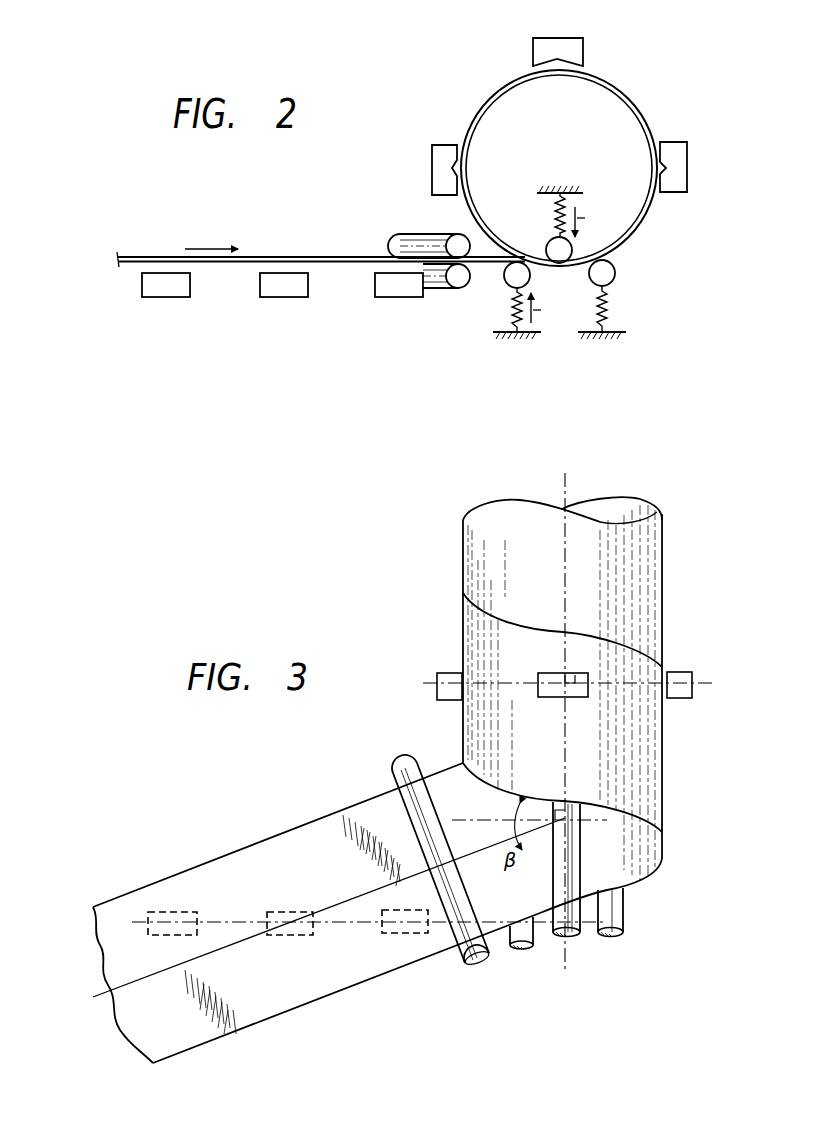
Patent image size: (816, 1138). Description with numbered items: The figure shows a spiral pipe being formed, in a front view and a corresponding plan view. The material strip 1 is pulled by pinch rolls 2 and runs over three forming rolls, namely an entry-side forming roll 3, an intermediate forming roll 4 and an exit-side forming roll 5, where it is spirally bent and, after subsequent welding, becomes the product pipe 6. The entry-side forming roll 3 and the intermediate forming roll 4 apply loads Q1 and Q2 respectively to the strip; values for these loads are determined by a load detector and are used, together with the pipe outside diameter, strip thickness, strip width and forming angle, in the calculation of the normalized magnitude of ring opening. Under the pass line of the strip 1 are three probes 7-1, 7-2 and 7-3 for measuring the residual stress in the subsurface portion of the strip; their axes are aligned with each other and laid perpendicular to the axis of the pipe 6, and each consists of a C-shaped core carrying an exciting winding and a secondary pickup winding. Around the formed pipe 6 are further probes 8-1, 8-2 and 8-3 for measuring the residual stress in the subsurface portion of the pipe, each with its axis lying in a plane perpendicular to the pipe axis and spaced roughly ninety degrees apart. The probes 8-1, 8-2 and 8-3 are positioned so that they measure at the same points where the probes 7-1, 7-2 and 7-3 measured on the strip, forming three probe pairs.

In FIG. 2, the material strip 1 is at (330, 256).
In FIG. 3, the material strip 1 is at (307, 836).
In FIG. 2, the pinch rolls 2 is at (422, 247).
In FIG. 3, the pinch rolls 2 is at (480, 963).
In FIG. 2, the entry-side forming roll 3 is at (508, 276).
In FIG. 3, the entry-side forming roll 3 is at (526, 949).
In FIG. 2, the intermediate forming roll 4 is at (548, 248).
In FIG. 3, the intermediate forming roll 4 is at (572, 937).
In FIG. 2, the exit-side forming roll 5 is at (614, 276).
In FIG. 3, the exit-side forming roll 5 is at (614, 936).
In FIG. 2, the product pipe 6 is at (652, 207).
In FIG. 3, the product pipe 6 is at (663, 542).
In FIG. 2, the probe 7-1 is at (167, 297).
In FIG. 3, the probe 7-1 is at (186, 912).
In FIG. 2, the probe 7-2 is at (285, 297).
In FIG. 3, the probe 7-2 is at (288, 913).
In FIG. 2, the probe 7-3 is at (398, 297).
In FIG. 3, the probe 7-3 is at (404, 933).
In FIG. 2, the probe 8-1 is at (441, 151).
In FIG. 3, the probe 8-1 is at (445, 673).
In FIG. 2, the probe 8-2 is at (557, 43).
In FIG. 3, the probe 8-2 is at (546, 673).
In FIG. 2, the probe 8-3 is at (673, 148).
In FIG. 3, the probe 8-3 is at (680, 672).
In FIG. 2, the load applied by entry-side forming roll Q1 is at (549, 309).
In FIG. 2, the load applied by intermediate forming roll Q2 is at (592, 222).